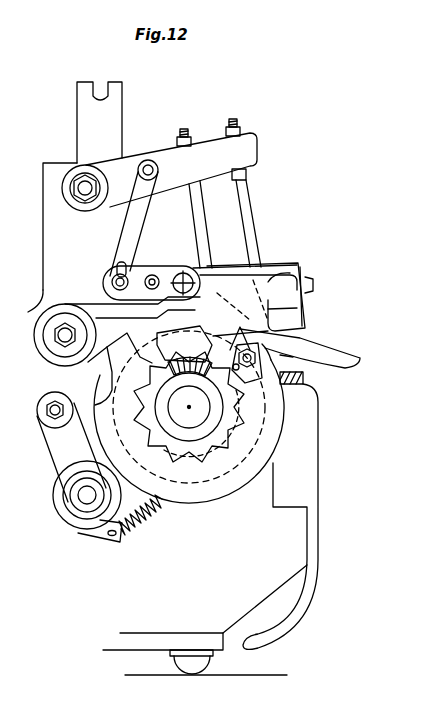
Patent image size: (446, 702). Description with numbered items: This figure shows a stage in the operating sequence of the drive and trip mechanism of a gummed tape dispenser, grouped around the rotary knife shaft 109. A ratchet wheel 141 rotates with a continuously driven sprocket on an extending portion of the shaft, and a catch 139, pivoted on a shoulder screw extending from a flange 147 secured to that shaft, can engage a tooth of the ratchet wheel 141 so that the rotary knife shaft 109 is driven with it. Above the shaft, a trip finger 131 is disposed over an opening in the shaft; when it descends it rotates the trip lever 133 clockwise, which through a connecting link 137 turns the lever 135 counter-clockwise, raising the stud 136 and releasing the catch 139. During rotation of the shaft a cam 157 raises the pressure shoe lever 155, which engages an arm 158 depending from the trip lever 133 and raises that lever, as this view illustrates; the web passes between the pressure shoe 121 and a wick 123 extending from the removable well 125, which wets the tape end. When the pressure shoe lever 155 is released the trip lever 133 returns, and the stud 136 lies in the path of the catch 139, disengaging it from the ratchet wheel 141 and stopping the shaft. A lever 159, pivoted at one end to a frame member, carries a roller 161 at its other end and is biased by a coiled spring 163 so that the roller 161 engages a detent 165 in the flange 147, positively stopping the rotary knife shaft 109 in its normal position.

The rotary knife shaft 109 is at (229, 500).
The pressure shoe 121 is at (310, 318).
The wick 123 is at (307, 384).
The removable well 125 is at (313, 472).
The trip finger 131 is at (250, 193).
The trip lever 133 is at (222, 143).
The lever 135 is at (145, 266).
The stud 136 is at (190, 276).
The connecting link 137 is at (123, 243).
The catch 139 is at (280, 355).
The ratchet wheel 141 is at (140, 428).
The flange 147 is at (182, 500).
The pressure shoe lever 155 is at (270, 267).
The cam 157 is at (209, 354).
The arm 158 is at (202, 211).
The lever 159 is at (58, 467).
The roller 161 is at (72, 521).
The coiled spring 163 is at (142, 528).
The detent 165 is at (117, 381).